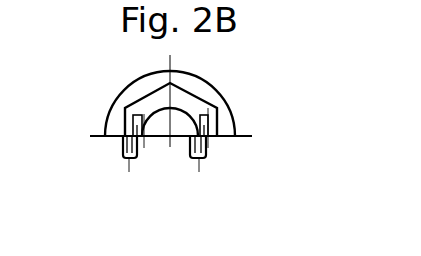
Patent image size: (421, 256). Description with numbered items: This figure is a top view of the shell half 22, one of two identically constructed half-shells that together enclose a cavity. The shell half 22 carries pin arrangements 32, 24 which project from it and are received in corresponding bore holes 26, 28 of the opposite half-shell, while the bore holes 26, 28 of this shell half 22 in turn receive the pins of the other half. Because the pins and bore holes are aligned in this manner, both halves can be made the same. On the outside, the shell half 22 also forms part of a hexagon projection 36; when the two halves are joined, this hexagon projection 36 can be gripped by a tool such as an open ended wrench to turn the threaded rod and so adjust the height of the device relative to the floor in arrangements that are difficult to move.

The shell half 22 is at (215, 85).
The hexagon projection 36 is at (137, 103).
The bore hole 28 is at (220, 133).
The bore hole 26 is at (143, 140).
The pin arrangement 32 is at (122, 152).
The pin arrangement 24 is at (210, 152).